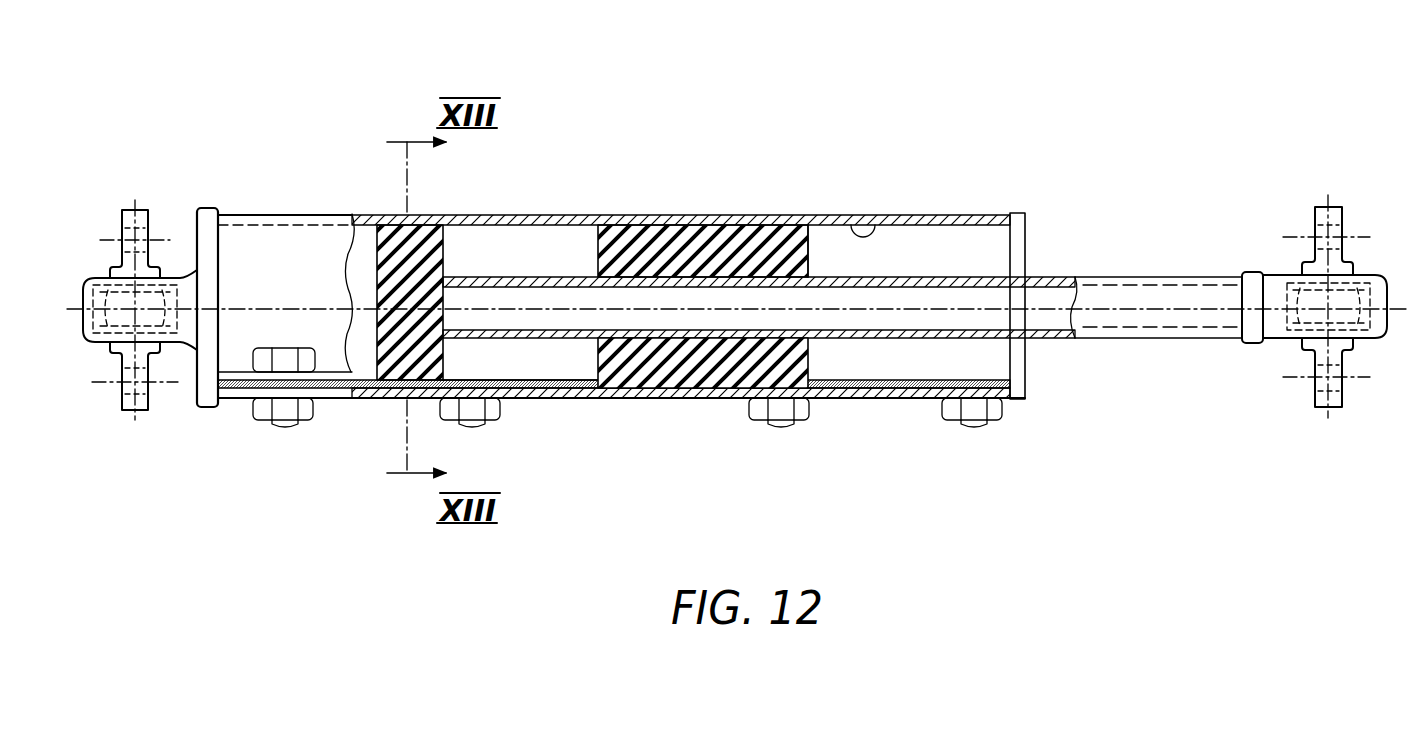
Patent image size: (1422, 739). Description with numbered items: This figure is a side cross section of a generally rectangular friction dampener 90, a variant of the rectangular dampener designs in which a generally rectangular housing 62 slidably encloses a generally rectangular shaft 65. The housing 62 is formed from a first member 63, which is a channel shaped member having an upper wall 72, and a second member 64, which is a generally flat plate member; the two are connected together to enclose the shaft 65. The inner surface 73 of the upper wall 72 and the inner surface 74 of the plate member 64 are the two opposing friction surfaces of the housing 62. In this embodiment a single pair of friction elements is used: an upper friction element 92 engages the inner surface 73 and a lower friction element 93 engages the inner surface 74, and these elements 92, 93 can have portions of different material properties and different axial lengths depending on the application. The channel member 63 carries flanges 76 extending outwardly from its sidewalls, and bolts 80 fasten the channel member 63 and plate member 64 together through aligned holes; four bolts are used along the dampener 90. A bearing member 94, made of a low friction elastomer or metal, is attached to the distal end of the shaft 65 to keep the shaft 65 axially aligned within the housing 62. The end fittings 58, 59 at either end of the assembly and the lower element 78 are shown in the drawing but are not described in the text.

The left clevis eye 58 is at (86, 280).
The right clevis eye 59 is at (1390, 285).
The rectangular housing 62 is at (621, 293).
The first member 63 is at (638, 214).
The second member 64 is at (622, 399).
The rectangular shaft 65 is at (897, 277).
The upper wall 72 is at (976, 213).
The inner surface of the upper wall 73 is at (868, 226).
The inner surface of the plate member 74 is at (540, 386).
The flanges 76 is at (235, 372).
The mounting plate 78 is at (337, 400).
The bolts 80 is at (280, 413).
The friction dampener 90 is at (749, 129).
The upper friction element 92 is at (798, 249).
The lower friction element 93 is at (796, 351).
The bearing member 94 is at (444, 257).